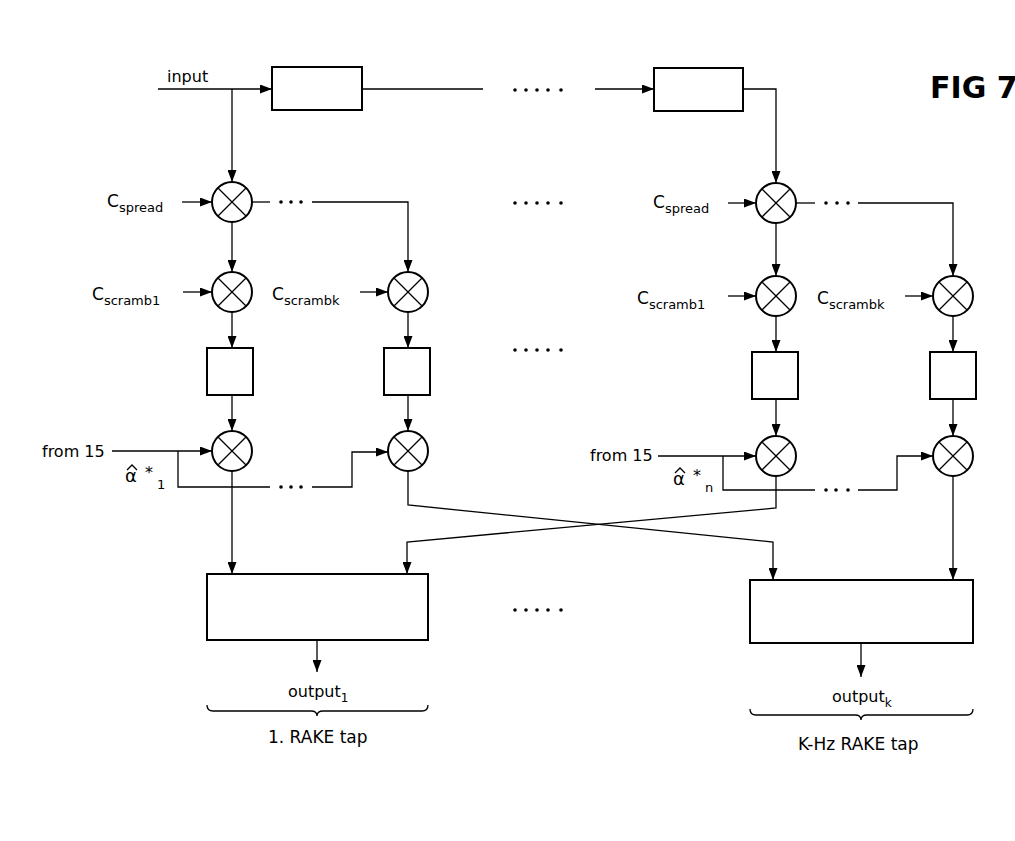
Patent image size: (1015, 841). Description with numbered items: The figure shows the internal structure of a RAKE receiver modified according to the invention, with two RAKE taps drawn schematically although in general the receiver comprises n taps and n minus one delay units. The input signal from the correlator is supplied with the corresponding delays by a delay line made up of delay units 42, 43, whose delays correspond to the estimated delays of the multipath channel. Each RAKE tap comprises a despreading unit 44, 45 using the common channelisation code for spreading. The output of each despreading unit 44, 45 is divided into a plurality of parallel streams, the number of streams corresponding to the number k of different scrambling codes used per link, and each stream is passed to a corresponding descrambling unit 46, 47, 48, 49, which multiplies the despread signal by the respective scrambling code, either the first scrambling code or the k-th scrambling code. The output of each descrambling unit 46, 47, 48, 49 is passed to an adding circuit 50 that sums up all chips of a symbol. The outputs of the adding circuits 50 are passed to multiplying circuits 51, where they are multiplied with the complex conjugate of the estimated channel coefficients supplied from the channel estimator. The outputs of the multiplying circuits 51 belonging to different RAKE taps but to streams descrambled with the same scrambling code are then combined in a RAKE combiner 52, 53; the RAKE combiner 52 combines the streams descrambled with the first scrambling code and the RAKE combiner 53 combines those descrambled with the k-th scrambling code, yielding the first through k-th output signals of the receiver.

The delay line unit 42 is at (316, 67).
The delay line unit 43 is at (698, 68).
The despreading unit 44 is at (243, 186).
The despreading unit 45 is at (787, 187).
The descrambling unit 46 is at (243, 277).
The descrambling unit 47 is at (419, 277).
The descrambling unit 48 is at (787, 281).
The descrambling unit 49 is at (964, 281).
The adding circuit 50 is at (207, 373).
The multiplying circuit 51 is at (250, 446).
The RAKE combiner 52 is at (207, 611).
The RAKE combiner 53 is at (750, 616).